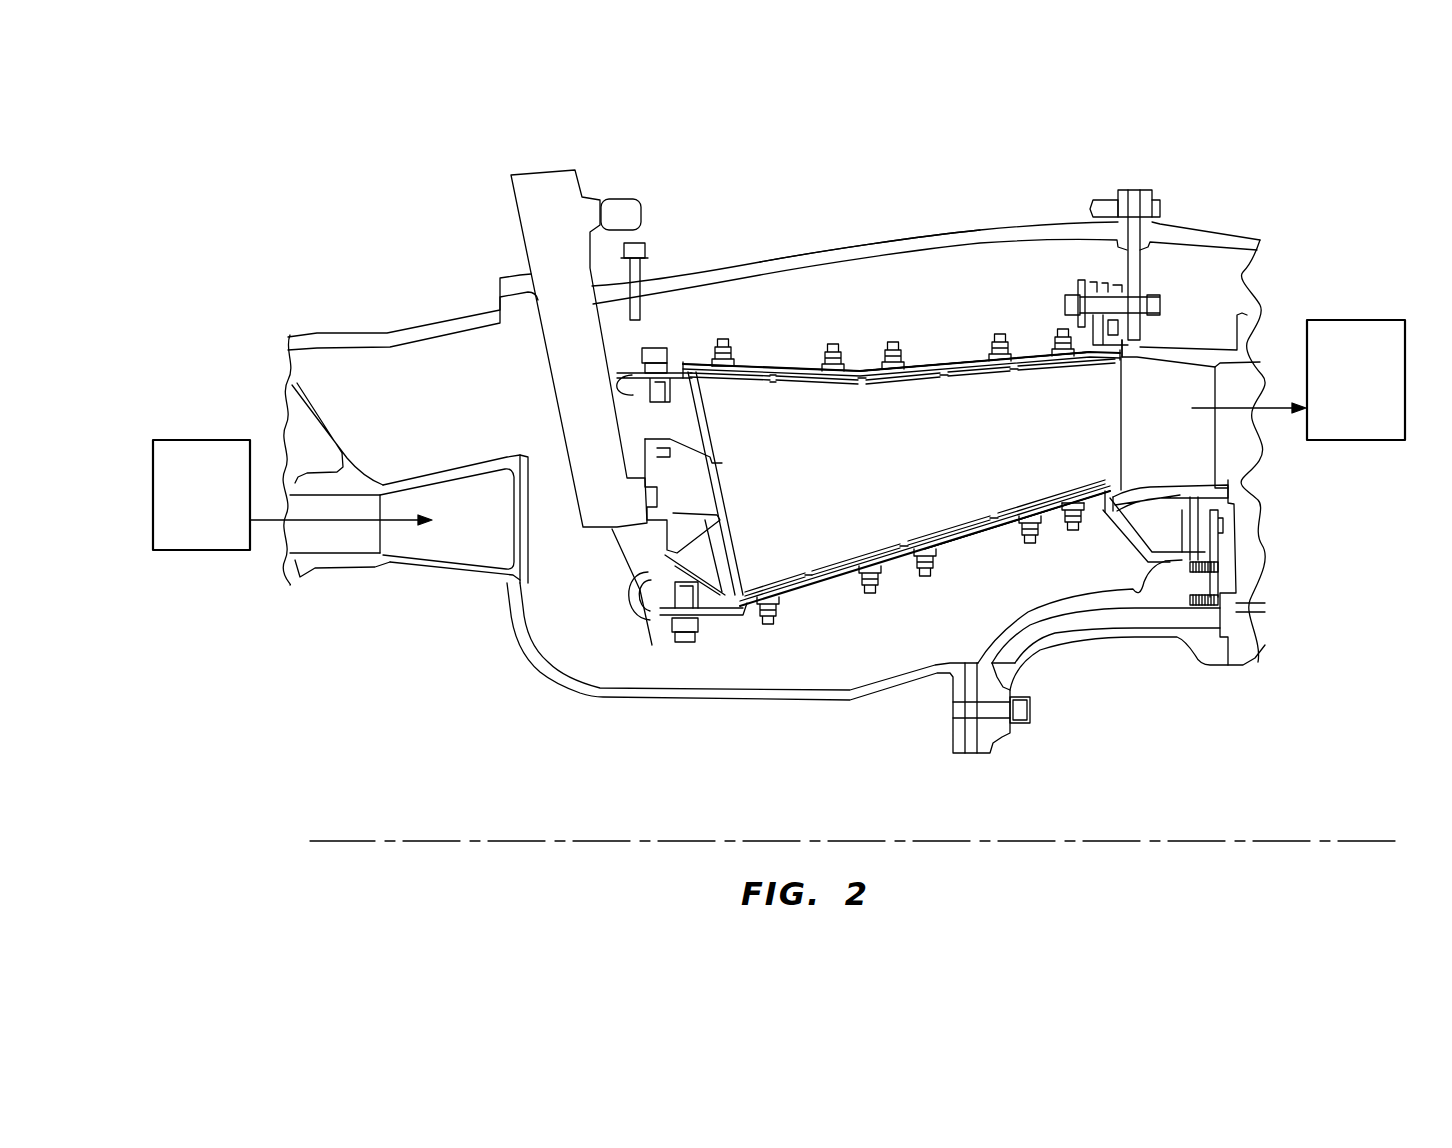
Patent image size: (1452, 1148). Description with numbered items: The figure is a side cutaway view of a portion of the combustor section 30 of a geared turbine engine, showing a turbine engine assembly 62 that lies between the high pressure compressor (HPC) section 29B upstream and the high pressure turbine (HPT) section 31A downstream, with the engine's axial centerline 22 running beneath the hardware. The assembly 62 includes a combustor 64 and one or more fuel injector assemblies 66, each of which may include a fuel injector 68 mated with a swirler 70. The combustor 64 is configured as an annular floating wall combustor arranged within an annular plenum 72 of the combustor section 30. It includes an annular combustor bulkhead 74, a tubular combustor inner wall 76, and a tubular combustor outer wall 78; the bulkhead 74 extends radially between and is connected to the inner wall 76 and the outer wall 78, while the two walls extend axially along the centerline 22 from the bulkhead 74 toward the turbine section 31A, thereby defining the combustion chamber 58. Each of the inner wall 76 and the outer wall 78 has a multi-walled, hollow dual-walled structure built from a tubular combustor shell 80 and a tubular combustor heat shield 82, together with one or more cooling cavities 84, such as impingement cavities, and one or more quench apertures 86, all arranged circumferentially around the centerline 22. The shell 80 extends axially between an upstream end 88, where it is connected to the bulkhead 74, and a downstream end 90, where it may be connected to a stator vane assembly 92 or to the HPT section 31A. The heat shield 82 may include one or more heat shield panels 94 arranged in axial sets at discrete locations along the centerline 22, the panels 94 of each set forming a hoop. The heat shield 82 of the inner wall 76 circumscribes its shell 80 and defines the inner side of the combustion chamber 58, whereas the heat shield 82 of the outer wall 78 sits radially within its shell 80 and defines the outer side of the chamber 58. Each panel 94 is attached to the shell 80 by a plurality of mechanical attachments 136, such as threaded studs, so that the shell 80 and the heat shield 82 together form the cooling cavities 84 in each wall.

The axial centerline 22 is at (1114, 841).
The high pressure compressor (HPC) section 29B is at (180, 536).
The combustor section 30 is at (1156, 166).
The high pressure turbine (HPT) section 31A is at (1334, 418).
The combustion chamber 58 is at (894, 454).
The turbine engine assembly 62 is at (940, 185).
The combustor 64 is at (850, 324).
The fuel injector assembly 66 is at (597, 546).
The fuel injector 68 is at (548, 360).
The swirler 70 is at (660, 578).
The annular plenum 72 is at (449, 411).
The combustor bulkhead 74 is at (742, 538).
The combustor inner wall 76 is at (990, 556).
The combustor outer wall 78 is at (1020, 324).
The combustor shell 80 is at (780, 358).
The combustor heat shield 82 is at (747, 396).
The cooling cavity 84 is at (755, 358).
The quench aperture 86 is at (945, 358).
The upstream end 88 is at (613, 377).
The downstream end 90 is at (1138, 350).
The stator vane assembly 92 is at (1153, 434).
The heat shield panel 94 is at (780, 386).
The mechanical attachment 136 is at (722, 339).